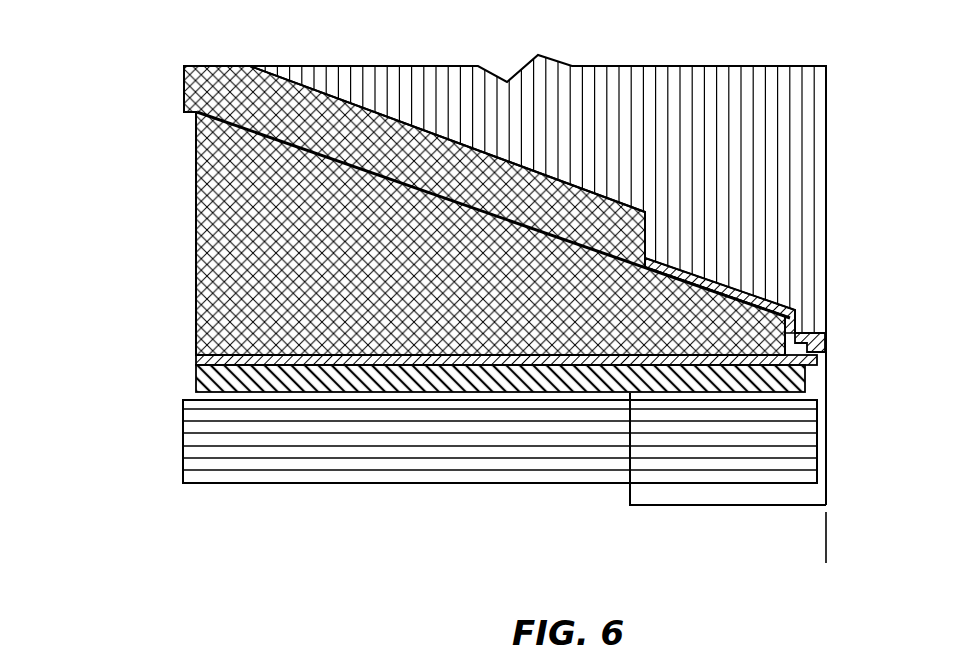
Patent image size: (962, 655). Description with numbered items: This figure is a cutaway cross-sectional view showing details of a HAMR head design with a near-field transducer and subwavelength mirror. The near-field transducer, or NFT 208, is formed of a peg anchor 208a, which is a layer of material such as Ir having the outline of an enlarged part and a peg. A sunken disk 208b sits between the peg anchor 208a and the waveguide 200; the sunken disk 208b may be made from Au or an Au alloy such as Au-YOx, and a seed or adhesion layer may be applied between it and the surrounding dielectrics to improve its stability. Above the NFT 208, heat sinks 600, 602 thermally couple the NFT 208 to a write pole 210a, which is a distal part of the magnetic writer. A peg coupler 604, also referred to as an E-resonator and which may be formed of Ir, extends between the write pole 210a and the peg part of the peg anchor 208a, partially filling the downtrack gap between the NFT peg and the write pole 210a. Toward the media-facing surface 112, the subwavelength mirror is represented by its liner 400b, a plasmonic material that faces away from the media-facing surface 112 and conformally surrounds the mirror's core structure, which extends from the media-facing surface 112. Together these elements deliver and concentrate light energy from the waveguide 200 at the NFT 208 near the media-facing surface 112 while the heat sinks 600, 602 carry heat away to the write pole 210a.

The write pole 210a is at (731, 87).
The heat sink 600 is at (195, 260).
The heat sink 602 is at (185, 85).
The peg coupler 604 is at (826, 338).
The near-field transducer (NFT) 208 is at (104, 365).
The peg anchor 208a is at (197, 362).
The sunken disk 208b is at (195, 388).
The waveguide 200 is at (310, 473).
The liner 400b is at (753, 495).
The media-facing surface 112 is at (827, 540).